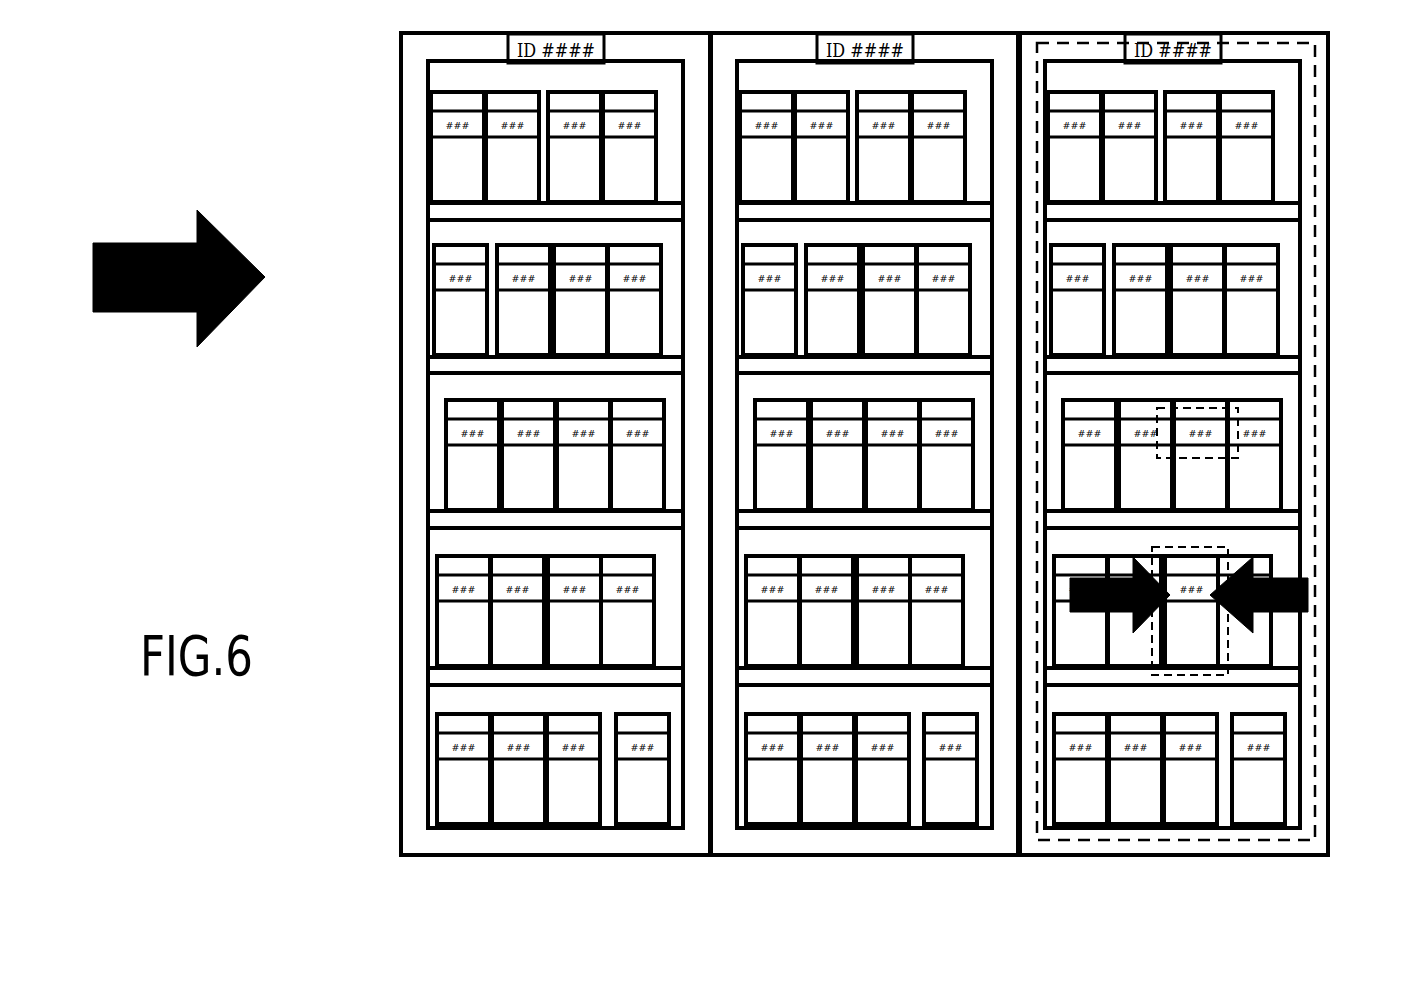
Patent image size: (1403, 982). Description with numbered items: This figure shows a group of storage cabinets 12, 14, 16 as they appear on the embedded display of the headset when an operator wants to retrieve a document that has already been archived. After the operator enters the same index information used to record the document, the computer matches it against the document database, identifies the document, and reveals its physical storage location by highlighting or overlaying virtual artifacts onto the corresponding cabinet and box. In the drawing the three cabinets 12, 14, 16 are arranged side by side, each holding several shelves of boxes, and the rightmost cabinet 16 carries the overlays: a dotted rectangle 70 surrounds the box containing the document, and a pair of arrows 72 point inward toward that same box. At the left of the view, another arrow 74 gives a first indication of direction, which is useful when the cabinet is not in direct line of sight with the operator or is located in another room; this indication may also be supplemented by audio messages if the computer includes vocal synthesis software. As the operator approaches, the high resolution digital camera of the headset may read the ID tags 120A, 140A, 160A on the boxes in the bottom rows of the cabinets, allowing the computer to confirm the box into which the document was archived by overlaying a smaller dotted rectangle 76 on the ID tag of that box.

The storage cabinet 12 is at (556, 463).
The ID tag 120A is at (632, 745).
The storage cabinet 14 is at (865, 463).
The ID tag 140A is at (947, 755).
The storage cabinet 16 is at (1192, 463).
The ID tag 160A is at (1252, 747).
The dotted rectangle 70 is at (1208, 547).
The arrows 72 is at (1310, 590).
The arrow 74 is at (142, 243).
The smaller dotted rectangle 76 is at (1199, 460).